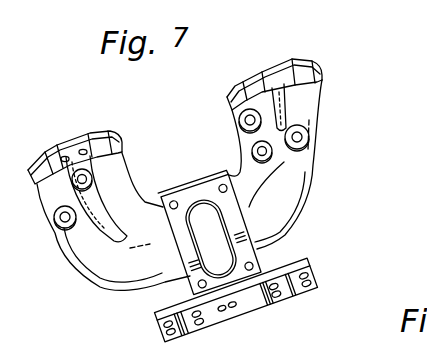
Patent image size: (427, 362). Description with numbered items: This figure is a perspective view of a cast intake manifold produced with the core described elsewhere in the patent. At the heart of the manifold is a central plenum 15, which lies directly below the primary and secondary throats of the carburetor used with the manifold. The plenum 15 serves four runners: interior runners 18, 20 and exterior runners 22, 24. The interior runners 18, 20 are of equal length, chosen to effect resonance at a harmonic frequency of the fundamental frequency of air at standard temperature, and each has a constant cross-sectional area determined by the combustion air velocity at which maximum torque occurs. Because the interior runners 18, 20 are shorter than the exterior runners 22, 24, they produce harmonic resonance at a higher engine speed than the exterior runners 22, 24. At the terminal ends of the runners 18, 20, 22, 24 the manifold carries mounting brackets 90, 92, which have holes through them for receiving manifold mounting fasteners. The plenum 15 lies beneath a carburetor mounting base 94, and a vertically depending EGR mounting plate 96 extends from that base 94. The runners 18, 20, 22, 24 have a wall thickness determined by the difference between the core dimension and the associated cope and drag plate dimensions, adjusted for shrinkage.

The central plenum 15 is at (222, 268).
The interior runner 18 is at (118, 168).
The interior runner 20 is at (255, 177).
The exterior runner 22 is at (57, 196).
The exterior runner 24 is at (307, 156).
The mounting bracket 90 is at (65, 140).
The mounting bracket 92 is at (275, 58).
The carburetor mounting base 94 is at (247, 253).
The EGR mounting plate 96 is at (307, 265).